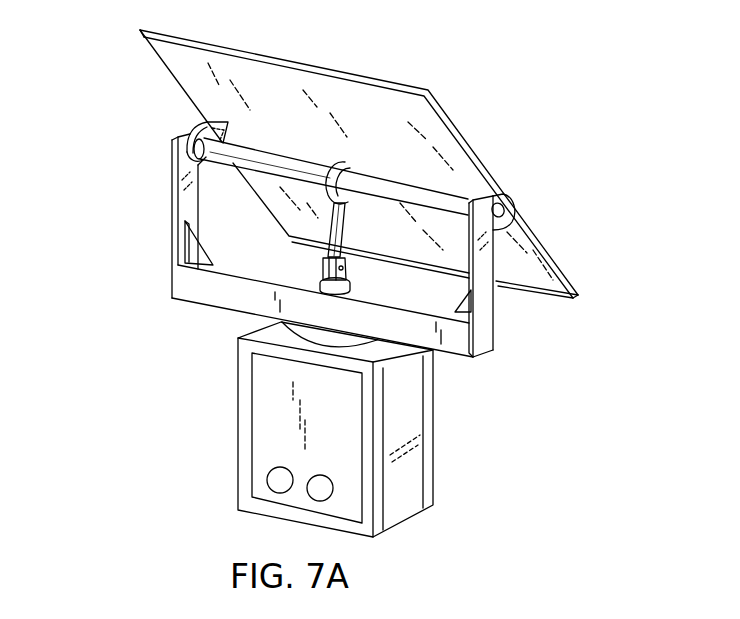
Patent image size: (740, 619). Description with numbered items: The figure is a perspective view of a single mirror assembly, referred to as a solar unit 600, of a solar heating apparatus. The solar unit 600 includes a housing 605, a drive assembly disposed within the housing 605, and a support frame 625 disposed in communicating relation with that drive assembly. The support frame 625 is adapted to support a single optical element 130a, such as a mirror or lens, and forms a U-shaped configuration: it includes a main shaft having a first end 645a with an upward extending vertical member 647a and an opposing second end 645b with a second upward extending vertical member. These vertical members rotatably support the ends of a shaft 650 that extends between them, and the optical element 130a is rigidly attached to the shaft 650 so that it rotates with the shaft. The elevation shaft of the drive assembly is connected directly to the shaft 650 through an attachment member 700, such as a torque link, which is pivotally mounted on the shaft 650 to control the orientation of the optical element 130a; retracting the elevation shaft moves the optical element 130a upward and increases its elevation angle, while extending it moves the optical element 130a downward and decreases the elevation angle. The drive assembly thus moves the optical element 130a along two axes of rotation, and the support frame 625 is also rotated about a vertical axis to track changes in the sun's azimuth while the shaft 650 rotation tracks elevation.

The solar unit 600 is at (625, 110).
The optical element 130a is at (430, 90).
The support frame 625 is at (108, 170).
The first end 645a is at (148, 279).
The second end 645b is at (508, 338).
The vertical member 647a is at (185, 148).
The shaft 650 is at (458, 197).
The attachment member 700 is at (331, 224).
The housing 605 is at (382, 504).